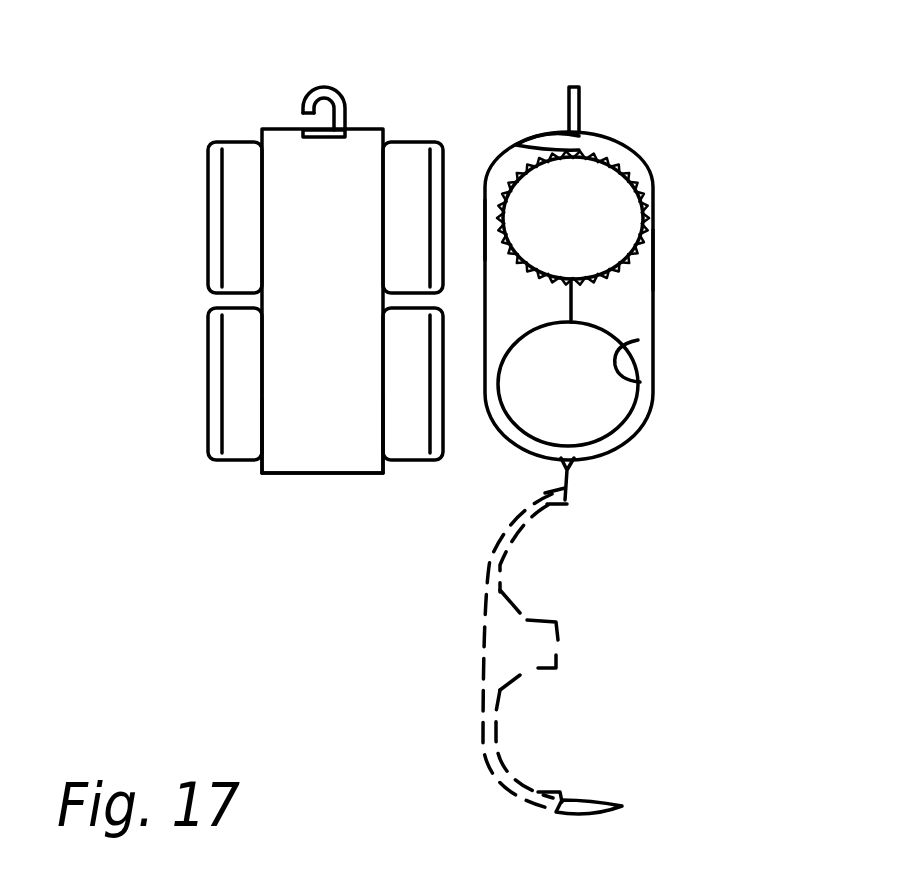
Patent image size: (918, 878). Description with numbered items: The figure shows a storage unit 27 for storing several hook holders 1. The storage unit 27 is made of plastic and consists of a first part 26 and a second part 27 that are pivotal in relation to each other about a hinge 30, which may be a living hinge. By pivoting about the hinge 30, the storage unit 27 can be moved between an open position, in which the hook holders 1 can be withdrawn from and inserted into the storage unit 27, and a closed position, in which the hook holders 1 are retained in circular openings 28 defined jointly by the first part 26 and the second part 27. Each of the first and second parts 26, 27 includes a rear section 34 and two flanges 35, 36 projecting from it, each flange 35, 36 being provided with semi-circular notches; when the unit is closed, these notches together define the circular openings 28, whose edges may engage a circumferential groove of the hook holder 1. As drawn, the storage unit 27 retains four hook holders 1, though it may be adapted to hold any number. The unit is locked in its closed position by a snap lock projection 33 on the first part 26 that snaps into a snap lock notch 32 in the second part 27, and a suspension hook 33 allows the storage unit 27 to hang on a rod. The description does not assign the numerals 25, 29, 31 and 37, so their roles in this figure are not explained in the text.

The hook holder 1 is at (235, 215).
The belt tensioning assembly 25 is at (648, 413).
The first part 26 is at (532, 320).
The storage unit 27 is at (333, 328).
The circular opening 28 is at (592, 246).
The cutout 29 is at (632, 381).
The hinge 30 is at (575, 470).
The hook 31 is at (338, 93).
The snap lock notch 32 is at (566, 798).
The snap lock projection 33 is at (600, 136).
The rear section 34 is at (330, 450).
The flange 35 is at (253, 425).
The flange 36 is at (385, 415).
The gear teeth 37 is at (640, 177).